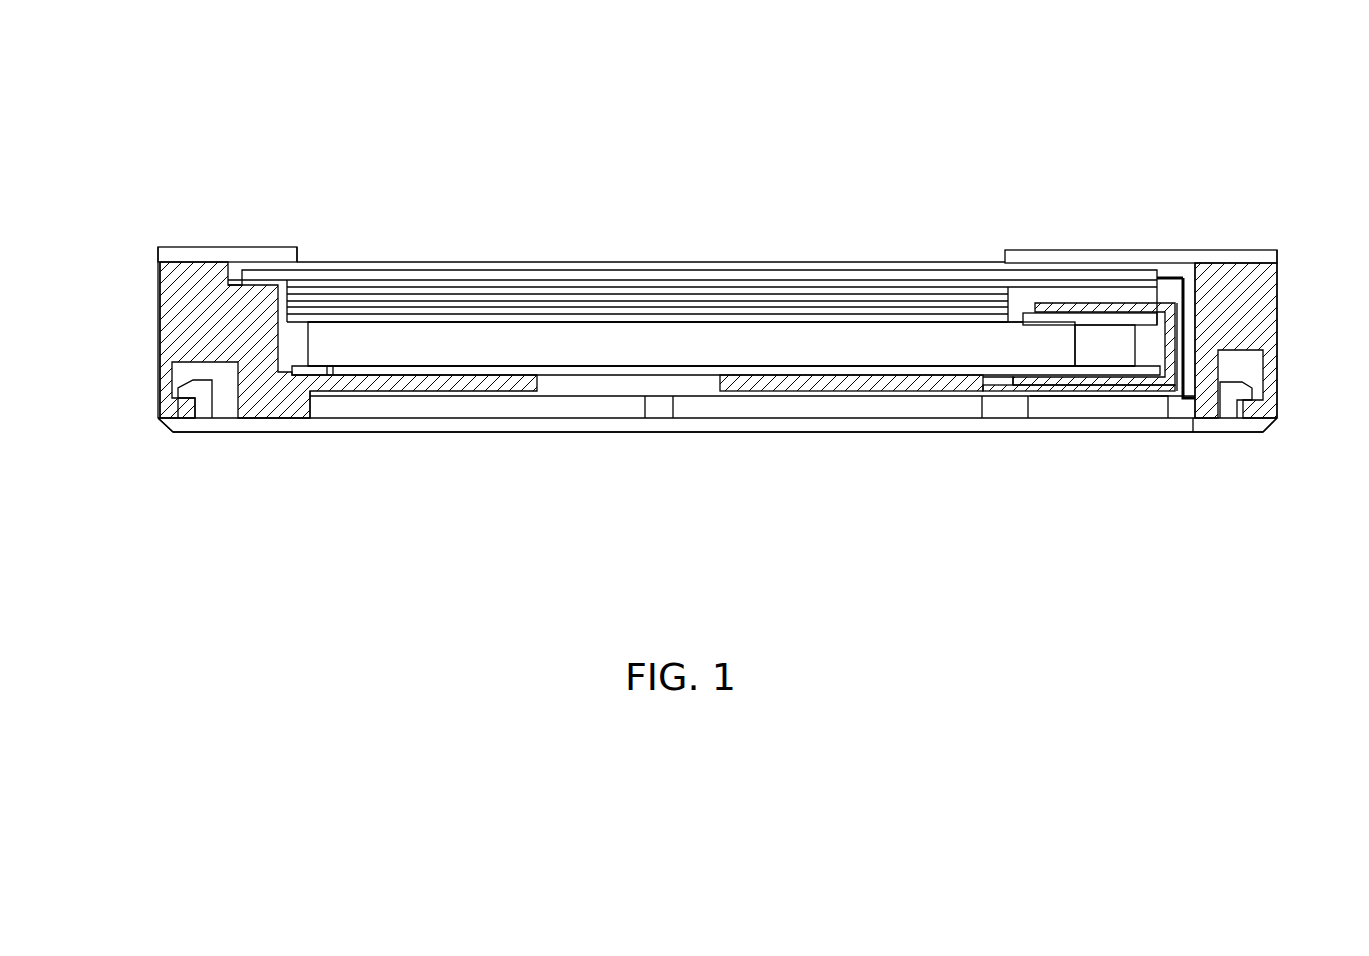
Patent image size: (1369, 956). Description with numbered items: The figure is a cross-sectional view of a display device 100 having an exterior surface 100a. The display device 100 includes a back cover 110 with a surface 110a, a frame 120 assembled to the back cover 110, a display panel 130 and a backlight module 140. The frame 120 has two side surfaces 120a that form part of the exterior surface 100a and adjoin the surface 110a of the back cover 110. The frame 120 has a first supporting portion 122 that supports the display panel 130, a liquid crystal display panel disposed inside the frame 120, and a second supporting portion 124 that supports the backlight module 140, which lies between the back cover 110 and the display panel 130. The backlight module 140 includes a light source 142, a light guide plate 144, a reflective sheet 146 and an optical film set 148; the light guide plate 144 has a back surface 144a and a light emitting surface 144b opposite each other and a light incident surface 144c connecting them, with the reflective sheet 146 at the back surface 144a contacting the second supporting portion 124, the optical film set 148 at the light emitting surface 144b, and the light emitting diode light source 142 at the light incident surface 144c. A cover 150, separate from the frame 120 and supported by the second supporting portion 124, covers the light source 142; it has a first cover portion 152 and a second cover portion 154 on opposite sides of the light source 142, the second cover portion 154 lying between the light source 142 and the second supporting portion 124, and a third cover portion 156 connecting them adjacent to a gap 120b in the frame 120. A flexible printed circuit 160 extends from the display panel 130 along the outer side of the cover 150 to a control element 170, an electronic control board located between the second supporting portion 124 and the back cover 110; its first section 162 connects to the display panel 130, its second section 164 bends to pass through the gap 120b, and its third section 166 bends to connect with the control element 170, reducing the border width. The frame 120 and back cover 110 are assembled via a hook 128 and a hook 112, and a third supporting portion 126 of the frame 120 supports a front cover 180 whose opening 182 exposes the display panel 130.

The display device 100 is at (1302, 624).
The exterior surface 100a is at (872, 50).
The back cover 110 is at (985, 433).
The surface 110a is at (641, 440).
The hook 112 is at (200, 385).
The frame 120 is at (126, 314).
The side surface 120a is at (155, 334).
The gap 120b is at (1196, 428).
The first supporting portion 122 is at (270, 312).
The second supporting portion 124 is at (720, 392).
The third supporting portion 126 is at (207, 270).
The hook 128 is at (178, 430).
The display panel 130 is at (575, 271).
The backlight module 140 is at (900, 498).
The light source 142 is at (1072, 341).
The light guide plate 144 is at (860, 345).
The back surface 144a is at (385, 368).
The light emitting surface 144b is at (700, 318).
The light incident surface 144c is at (1097, 395).
The reflective sheet 146 is at (800, 370).
The optical film set 148 is at (788, 307).
The cover 150 is at (1207, 498).
The first cover portion 152 is at (1117, 313).
The second cover portion 154 is at (1135, 326).
The third cover portion 156 is at (1167, 345).
The flexible printed circuit 160 is at (1250, 168).
The first section 162 is at (1170, 277).
The second section 164 is at (1188, 395).
The third section 166 is at (1205, 340).
The control element 170 is at (1040, 410).
The front cover 180 is at (248, 247).
The opening 182 is at (310, 260).